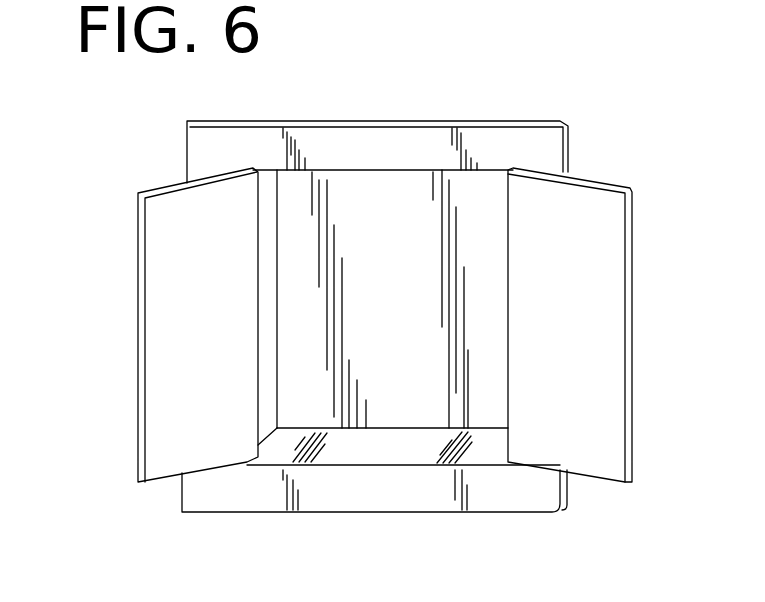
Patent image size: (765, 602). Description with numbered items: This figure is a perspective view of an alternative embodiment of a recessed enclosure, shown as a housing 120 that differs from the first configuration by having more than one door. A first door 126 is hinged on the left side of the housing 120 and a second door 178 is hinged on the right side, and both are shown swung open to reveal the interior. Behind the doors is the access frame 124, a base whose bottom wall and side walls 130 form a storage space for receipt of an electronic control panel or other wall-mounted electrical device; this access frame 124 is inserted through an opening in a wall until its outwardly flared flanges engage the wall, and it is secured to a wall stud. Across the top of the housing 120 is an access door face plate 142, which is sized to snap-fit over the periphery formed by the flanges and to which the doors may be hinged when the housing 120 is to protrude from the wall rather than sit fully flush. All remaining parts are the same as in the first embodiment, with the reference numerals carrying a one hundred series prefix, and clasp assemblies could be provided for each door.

The housing 120 is at (379, 307).
The access door face plate 142 is at (542, 145).
The access frame 124 is at (397, 402).
The side wall 130 is at (475, 450).
The first door 126 is at (167, 213).
The second door 178 is at (597, 453).